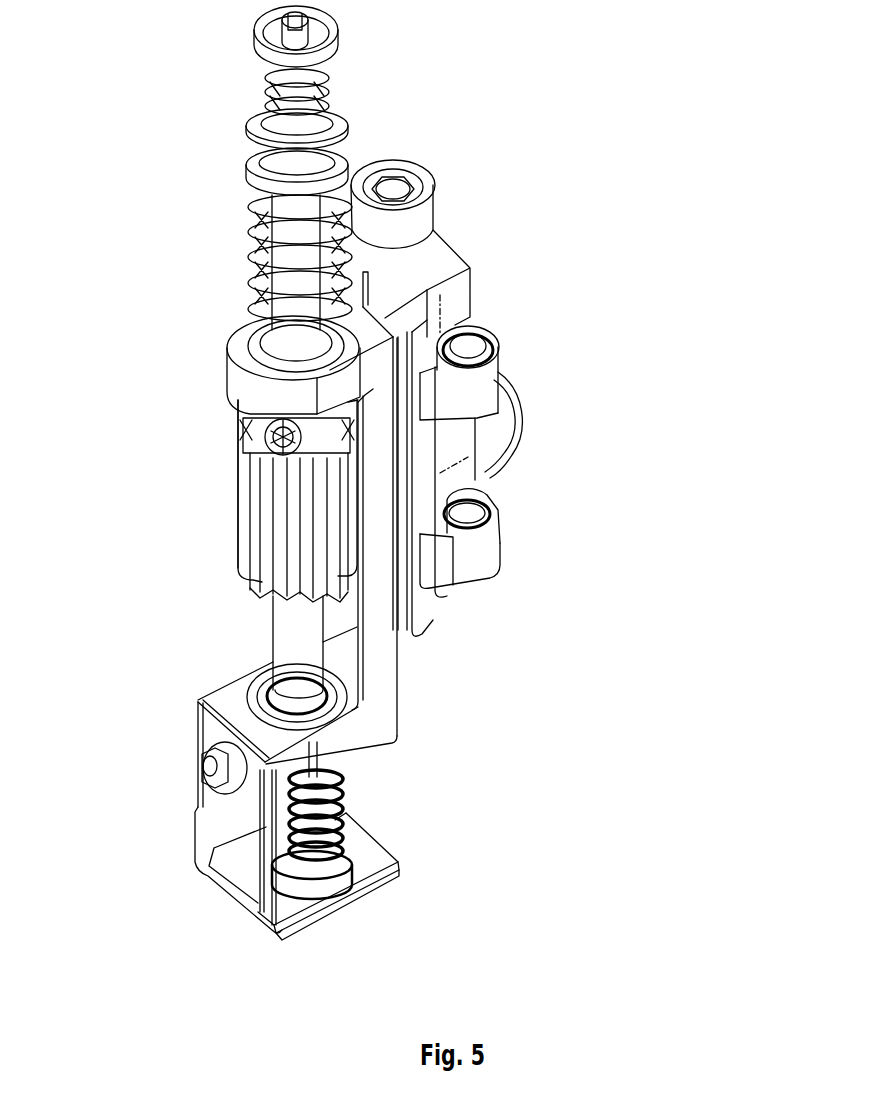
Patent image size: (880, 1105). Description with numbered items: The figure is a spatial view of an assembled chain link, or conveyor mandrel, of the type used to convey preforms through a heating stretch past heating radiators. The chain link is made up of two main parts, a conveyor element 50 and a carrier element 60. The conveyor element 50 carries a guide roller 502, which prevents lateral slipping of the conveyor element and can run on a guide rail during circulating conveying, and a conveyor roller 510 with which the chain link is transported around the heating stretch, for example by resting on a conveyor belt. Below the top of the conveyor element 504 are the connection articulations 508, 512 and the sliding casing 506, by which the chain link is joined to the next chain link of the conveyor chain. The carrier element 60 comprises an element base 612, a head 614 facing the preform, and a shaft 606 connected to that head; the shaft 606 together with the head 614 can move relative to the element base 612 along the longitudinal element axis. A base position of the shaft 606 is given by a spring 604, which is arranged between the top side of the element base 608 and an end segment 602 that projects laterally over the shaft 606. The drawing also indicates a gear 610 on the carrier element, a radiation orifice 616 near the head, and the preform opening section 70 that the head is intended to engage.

The conveyor element 50 is at (572, 313).
The carrier element 60 is at (203, 393).
The preform opening section 70 is at (399, 876).
The guide roller 502 is at (423, 222).
The top of the conveyor element 504 is at (442, 265).
The sliding casing 506 is at (470, 347).
The connection articulation 508 is at (477, 393).
The conveyor roller 510 is at (502, 433).
The connection articulation 512 is at (482, 548).
The end segment 602 is at (247, 155).
The spring 604 is at (257, 227).
The shaft 606 is at (257, 257).
The top side of the element base 608 is at (237, 332).
The gear 610 is at (237, 533).
The element base 612 is at (388, 703).
The head 614 is at (380, 787).
The radiation orifice 616 is at (366, 855).